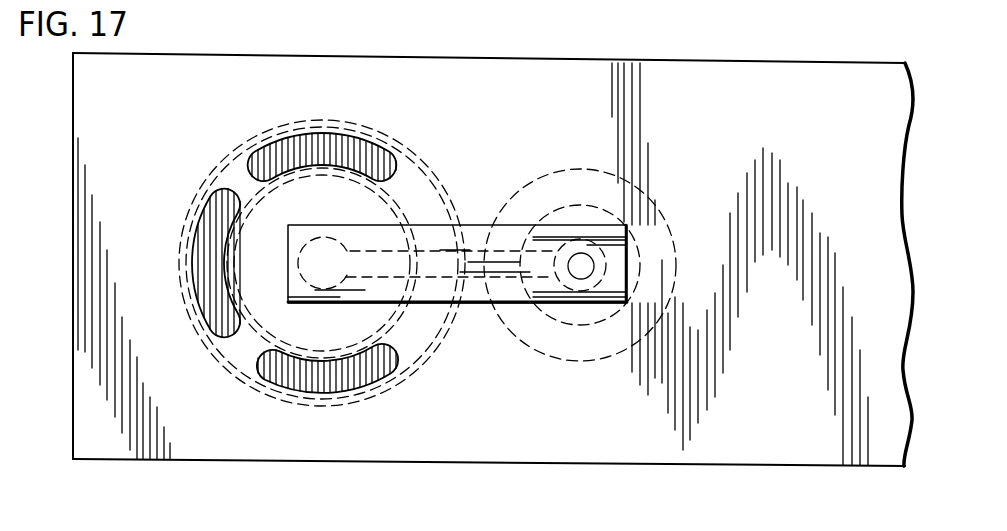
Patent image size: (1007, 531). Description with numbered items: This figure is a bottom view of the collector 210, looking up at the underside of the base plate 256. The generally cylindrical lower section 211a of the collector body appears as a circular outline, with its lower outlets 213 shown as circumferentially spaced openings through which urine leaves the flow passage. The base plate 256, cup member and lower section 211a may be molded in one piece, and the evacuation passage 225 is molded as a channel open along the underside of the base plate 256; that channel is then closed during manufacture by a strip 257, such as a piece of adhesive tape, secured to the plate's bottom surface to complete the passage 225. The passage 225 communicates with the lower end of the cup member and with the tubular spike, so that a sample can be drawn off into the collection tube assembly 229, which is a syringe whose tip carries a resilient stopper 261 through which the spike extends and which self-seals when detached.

The collector 210 is at (767, 62).
The lower section 211a is at (218, 167).
The lower outlets 213 is at (308, 134).
The evacuation passage 225 is at (382, 250).
The collection tube assembly 229 is at (556, 172).
The base plate 256 is at (538, 443).
The strip 257 is at (477, 306).
The resilient stopper 261 is at (622, 262).